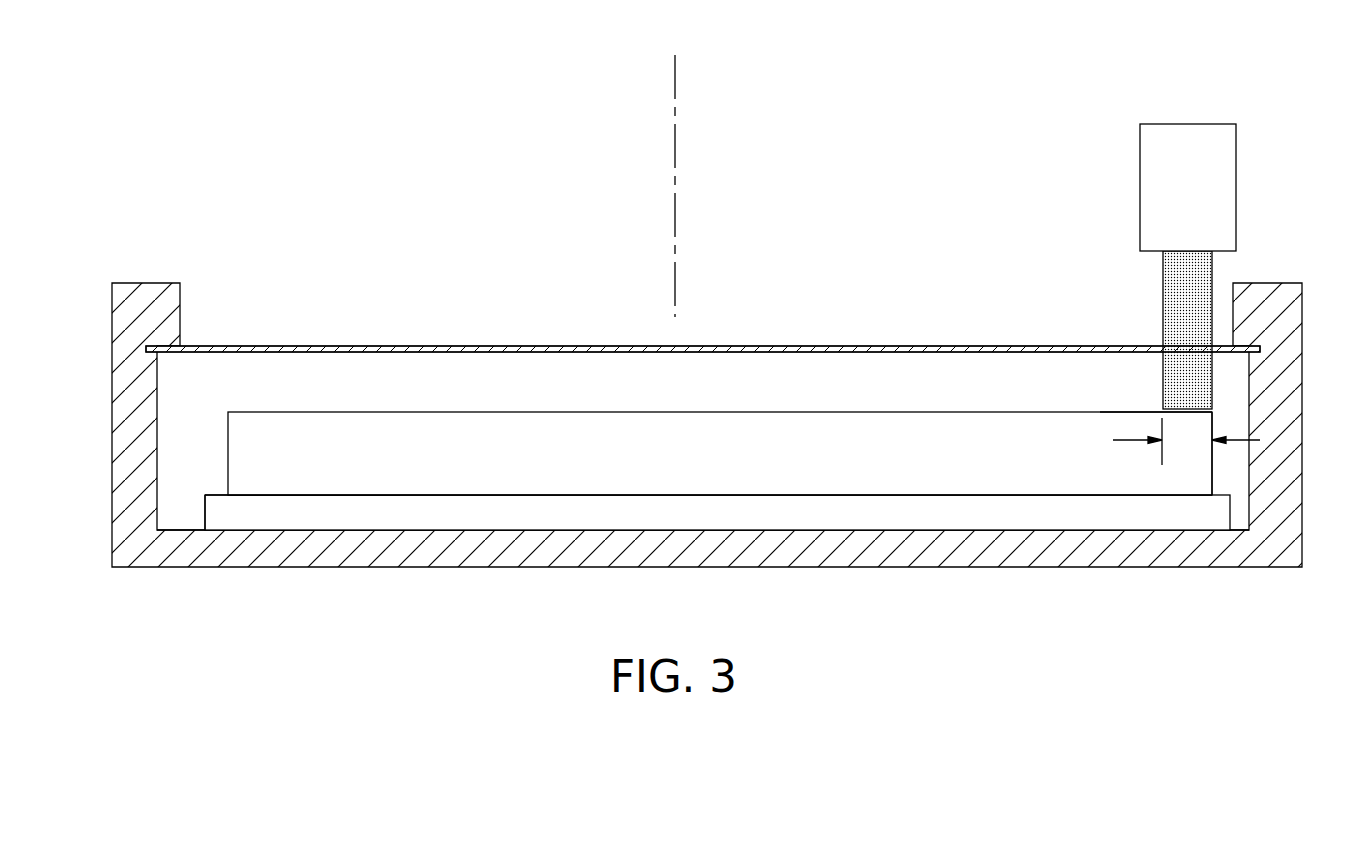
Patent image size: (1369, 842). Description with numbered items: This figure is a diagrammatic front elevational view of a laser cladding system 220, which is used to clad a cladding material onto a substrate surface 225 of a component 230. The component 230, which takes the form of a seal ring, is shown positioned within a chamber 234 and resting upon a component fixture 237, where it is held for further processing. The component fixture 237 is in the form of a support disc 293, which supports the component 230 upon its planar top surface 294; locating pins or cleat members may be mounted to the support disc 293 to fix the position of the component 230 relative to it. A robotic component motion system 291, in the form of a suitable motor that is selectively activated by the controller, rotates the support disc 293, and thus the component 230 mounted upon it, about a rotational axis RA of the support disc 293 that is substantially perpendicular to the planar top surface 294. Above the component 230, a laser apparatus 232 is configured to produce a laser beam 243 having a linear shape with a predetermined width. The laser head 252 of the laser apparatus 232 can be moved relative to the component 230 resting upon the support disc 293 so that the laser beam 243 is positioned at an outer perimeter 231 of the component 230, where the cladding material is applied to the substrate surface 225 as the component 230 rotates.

The laser cladding system 220 is at (707, 332).
The chamber 234 is at (112, 358).
The component 230 is at (331, 423).
The planar top surface 294 is at (492, 478).
The support disc 293 is at (485, 508).
The component fixture 237 is at (330, 507).
The robotic component motion system 291 is at (737, 510).
The outer perimeter 231 is at (1212, 409).
The substrate surface 225 is at (1133, 396).
The laser apparatus 232 is at (1192, 233).
The laser beam 243 is at (1163, 279).
The laser head 252 is at (1225, 178).
The rotational axis RA is at (675, 138).